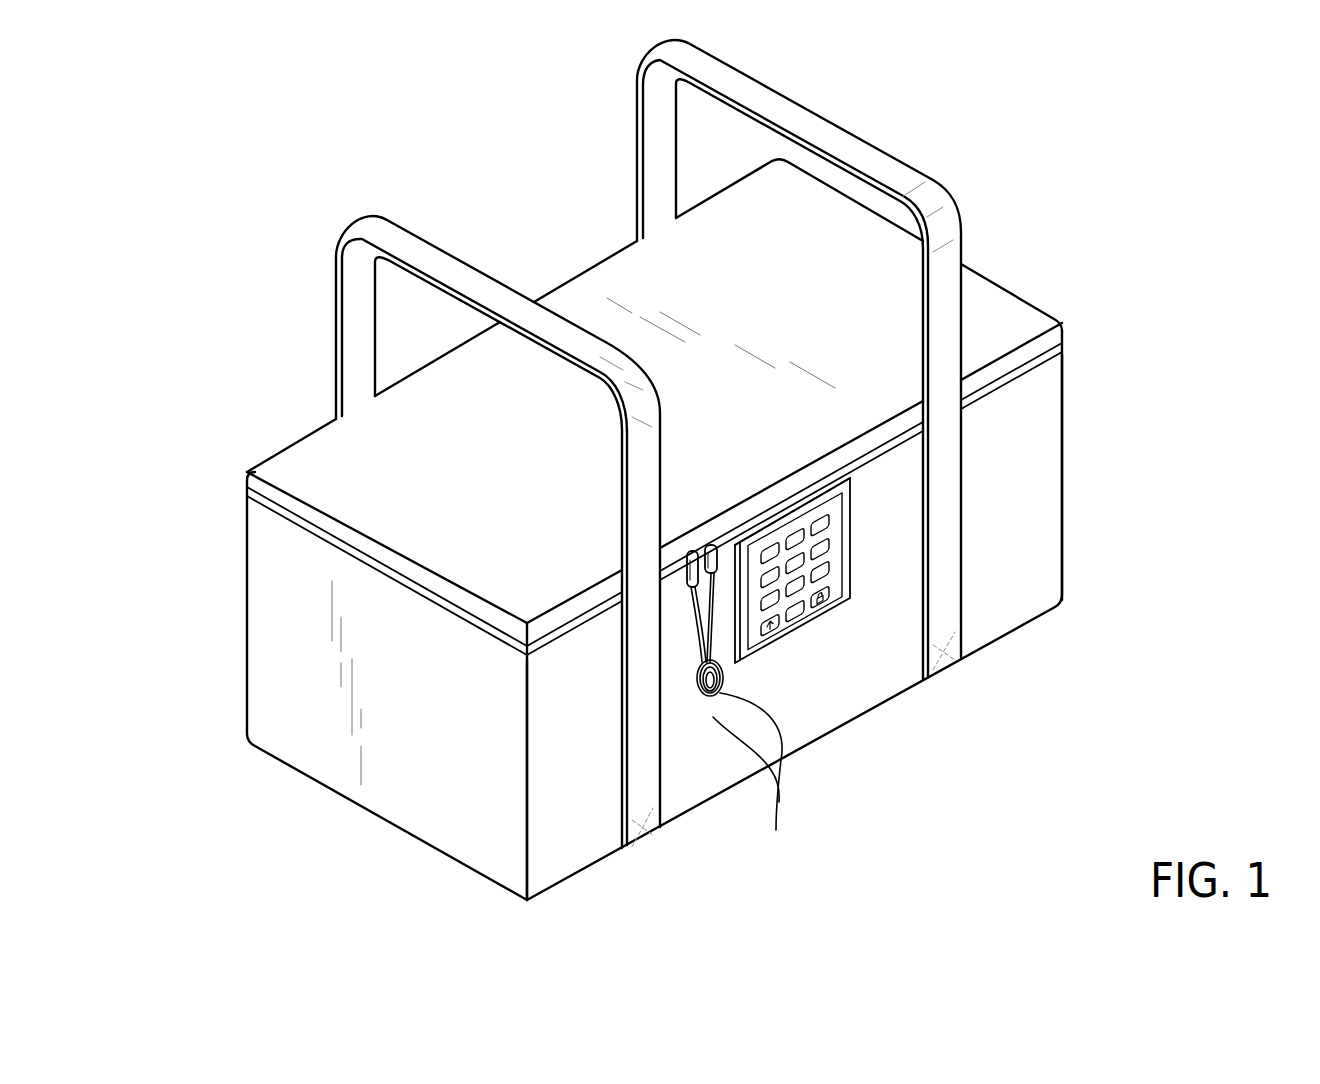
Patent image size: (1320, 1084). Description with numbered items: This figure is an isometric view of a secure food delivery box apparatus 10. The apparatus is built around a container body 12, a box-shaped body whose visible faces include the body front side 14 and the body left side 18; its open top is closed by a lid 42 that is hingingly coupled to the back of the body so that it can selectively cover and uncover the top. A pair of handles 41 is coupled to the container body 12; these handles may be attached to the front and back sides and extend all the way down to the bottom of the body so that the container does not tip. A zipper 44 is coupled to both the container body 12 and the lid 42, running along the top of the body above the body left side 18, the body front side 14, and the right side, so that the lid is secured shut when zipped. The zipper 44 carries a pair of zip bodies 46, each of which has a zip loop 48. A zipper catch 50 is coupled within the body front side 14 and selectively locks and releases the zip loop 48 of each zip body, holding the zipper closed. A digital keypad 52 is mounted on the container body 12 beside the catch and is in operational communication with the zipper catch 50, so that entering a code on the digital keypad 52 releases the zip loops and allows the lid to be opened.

The secure food delivery box apparatus 10 is at (1150, 252).
The container body 12 is at (1062, 427).
The body front side 14 is at (1038, 522).
The body left side 18 is at (300, 659).
The pair of handles 41 is at (683, 68).
The lid 42 is at (320, 462).
The zipper 44 is at (577, 640).
The zip bodies 46 is at (688, 556).
The zip loop 48 is at (742, 725).
The zipper catch 50 is at (700, 703).
The digital keypad 52 is at (797, 616).